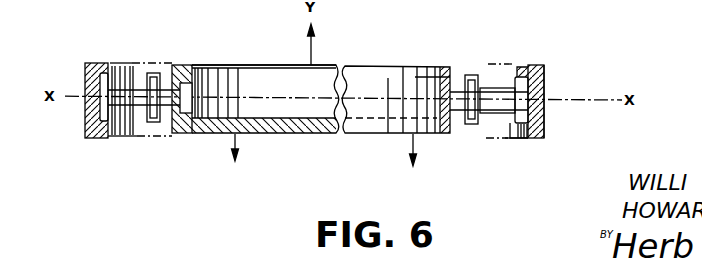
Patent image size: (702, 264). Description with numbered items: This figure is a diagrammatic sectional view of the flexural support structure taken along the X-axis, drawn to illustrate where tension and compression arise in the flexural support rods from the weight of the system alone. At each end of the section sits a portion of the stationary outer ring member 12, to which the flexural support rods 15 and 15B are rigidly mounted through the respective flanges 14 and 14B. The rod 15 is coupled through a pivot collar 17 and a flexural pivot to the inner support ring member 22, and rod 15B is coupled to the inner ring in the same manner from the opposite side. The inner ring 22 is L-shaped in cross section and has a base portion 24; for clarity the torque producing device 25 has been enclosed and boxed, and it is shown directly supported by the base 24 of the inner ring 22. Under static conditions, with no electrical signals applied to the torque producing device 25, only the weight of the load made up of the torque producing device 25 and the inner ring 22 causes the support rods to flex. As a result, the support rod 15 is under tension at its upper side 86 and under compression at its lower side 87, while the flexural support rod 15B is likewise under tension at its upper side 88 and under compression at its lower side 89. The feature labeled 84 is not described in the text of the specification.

The stationary outer ring member 12 is at (85, 68).
The flange 14 is at (109, 70).
The flange 14B is at (526, 68).
The flexural support rod 15 is at (144, 74).
The flexural support rod 15B is at (487, 86).
The pivot collar 17 is at (172, 66).
The inner support ring member 22 is at (199, 134).
The base portion 24 is at (287, 134).
The torque producing device 25 is at (290, 64).
The shaft end 84 is at (545, 82).
The upper side 86 is at (130, 67).
The lower side 87 is at (127, 137).
The upper side 88 is at (505, 86).
The lower side 89 is at (509, 139).